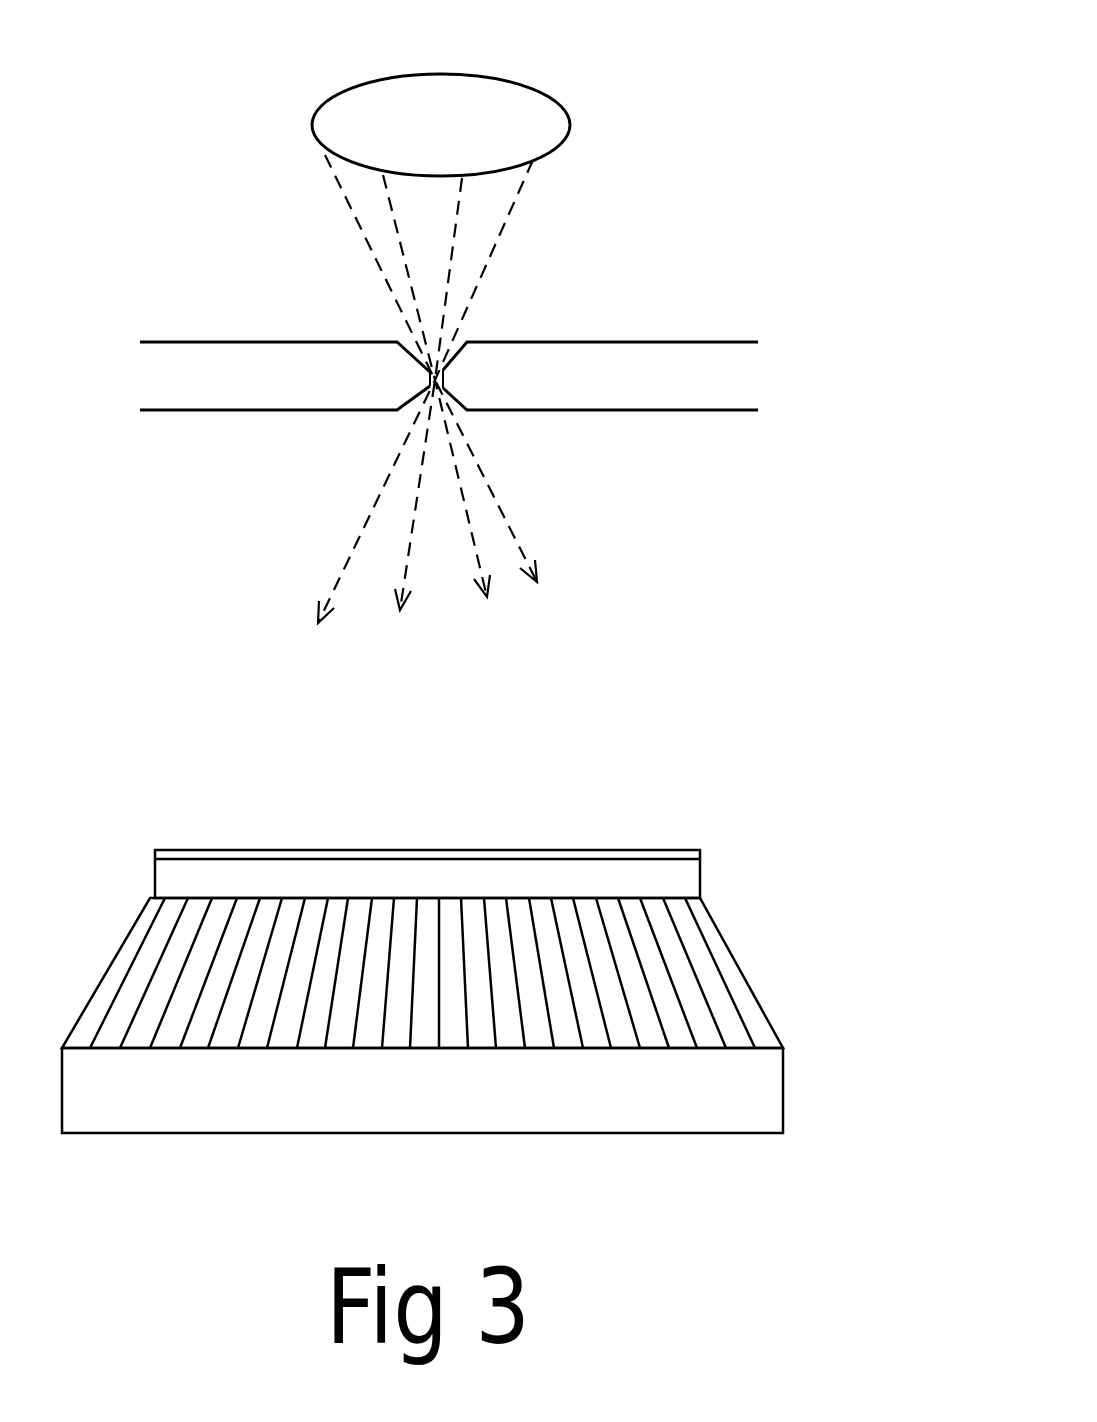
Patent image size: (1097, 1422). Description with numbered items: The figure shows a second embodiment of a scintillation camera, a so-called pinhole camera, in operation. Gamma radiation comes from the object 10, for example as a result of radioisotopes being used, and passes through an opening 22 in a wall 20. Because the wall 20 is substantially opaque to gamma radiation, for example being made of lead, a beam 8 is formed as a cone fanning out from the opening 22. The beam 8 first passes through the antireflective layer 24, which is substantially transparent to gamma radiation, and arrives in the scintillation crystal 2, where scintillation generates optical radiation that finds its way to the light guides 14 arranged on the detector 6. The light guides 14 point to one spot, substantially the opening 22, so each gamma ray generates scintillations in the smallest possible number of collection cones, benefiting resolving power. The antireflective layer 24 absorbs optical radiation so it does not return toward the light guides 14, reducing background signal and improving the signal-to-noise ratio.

The object 10 is at (537, 85).
The opening 22 is at (447, 362).
The wall 20 is at (653, 380).
The beam 8 is at (458, 570).
The antireflective layer 24 is at (608, 848).
The scintillation crystal 2 is at (667, 870).
The light guides 14 is at (727, 947).
The detector 6 is at (755, 1077).